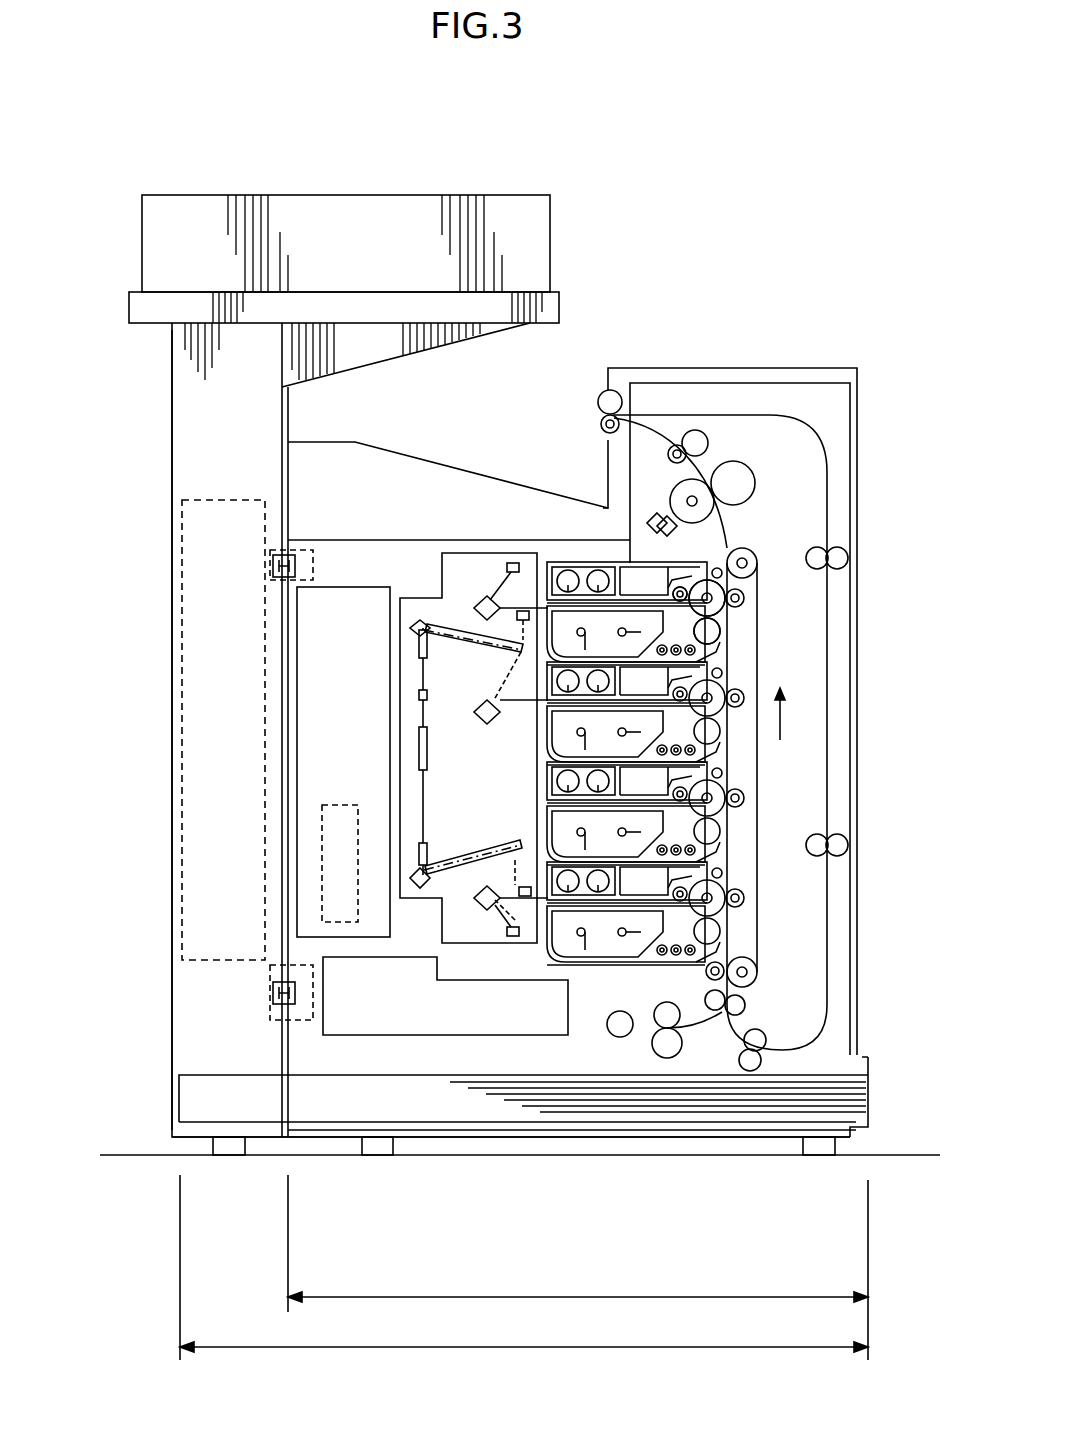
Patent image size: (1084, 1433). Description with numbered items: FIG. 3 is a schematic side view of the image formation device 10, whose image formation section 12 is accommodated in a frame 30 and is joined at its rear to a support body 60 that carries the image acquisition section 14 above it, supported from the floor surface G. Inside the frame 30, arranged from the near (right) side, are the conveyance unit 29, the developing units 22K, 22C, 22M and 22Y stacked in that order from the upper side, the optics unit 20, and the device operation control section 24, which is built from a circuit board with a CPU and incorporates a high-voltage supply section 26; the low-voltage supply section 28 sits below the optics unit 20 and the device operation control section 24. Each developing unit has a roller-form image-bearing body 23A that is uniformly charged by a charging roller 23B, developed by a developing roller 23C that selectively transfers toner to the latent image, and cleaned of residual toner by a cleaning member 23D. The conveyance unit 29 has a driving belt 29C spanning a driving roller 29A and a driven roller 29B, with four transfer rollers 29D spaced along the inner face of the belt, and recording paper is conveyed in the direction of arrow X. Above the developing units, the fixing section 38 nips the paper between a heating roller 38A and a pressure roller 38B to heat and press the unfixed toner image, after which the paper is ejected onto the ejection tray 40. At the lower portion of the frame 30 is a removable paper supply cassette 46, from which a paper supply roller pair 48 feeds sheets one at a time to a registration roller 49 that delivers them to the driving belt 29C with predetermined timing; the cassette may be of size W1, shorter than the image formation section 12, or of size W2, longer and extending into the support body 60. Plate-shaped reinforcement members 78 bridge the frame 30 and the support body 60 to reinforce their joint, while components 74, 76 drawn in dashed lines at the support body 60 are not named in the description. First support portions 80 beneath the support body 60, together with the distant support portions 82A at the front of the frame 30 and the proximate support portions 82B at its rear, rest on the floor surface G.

The image formation device 10 is at (754, 246).
The image formation section 12 is at (885, 596).
The image acquisition section 14 is at (234, 194).
The optics unit 20 is at (484, 555).
The developing unit (black) 22K is at (589, 563).
The developing unit (cyan) 22C is at (549, 678).
The developing unit (magenta) 22M is at (549, 781).
The developing unit (yellow) 22Y is at (549, 879).
The image-bearing body 23A is at (744, 600).
The charging roller 23B is at (677, 570).
The developing roller 23C is at (720, 632).
The cleaning member 23D is at (728, 540).
The device operation control section 24 is at (356, 587).
The high-voltage supply section 26 is at (345, 802).
The low-voltage supply section 28 is at (568, 995).
The conveyance unit 29 is at (808, 1045).
The driving roller 29A is at (746, 549).
The driven roller 29B is at (758, 978).
The driving belt 29C is at (762, 857).
The transfer rollers 29D is at (740, 605).
The frame 30 is at (857, 368).
The fixing section 38 is at (740, 459).
The heating roller 38A is at (672, 492).
The pressure roller 38B is at (757, 492).
The ejection tray 40 is at (500, 478).
The paper supply cassette 46 is at (870, 1108).
The paper supply roller pair 48 is at (652, 1046).
The registration roller 49 is at (746, 1009).
The support body 60 is at (172, 392).
The duct 74 is at (160, 730).
The harness 76 is at (182, 717).
The reinforcement members 78 is at (270, 565).
The first support portions 80 is at (243, 1147).
The distant support portions 82A is at (843, 1157).
The proximate support portions 82B is at (392, 1147).
The floor surface G is at (135, 1155).
The cassette size W1 is at (578, 1267).
The cassette size W2 is at (524, 1267).
The conveyance direction X is at (783, 715).